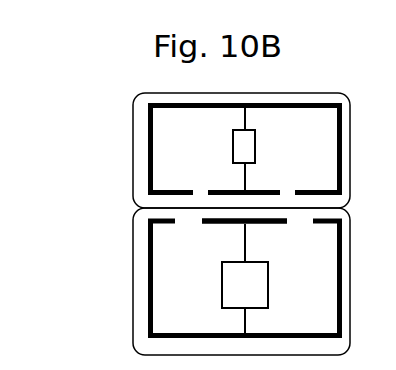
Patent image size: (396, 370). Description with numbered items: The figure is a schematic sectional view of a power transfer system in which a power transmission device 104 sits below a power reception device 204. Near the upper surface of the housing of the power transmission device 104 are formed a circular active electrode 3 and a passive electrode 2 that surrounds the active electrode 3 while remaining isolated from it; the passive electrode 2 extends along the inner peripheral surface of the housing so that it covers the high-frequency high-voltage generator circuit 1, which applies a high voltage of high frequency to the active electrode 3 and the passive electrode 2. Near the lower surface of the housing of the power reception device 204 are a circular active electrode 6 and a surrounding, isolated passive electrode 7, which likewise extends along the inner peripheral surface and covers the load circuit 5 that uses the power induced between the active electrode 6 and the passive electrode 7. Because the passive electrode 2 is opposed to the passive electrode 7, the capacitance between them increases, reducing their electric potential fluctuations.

The high-frequency high-voltage generator circuit 1 is at (221, 287).
The passive electrode 2 is at (290, 333).
The active electrode 3 is at (275, 224).
The load circuit 5 is at (256, 137).
The active electrode 6 is at (274, 188).
The passive electrode 7 is at (200, 110).
The power transmission device 104 is at (132, 282).
The power reception device 204 is at (132, 149).